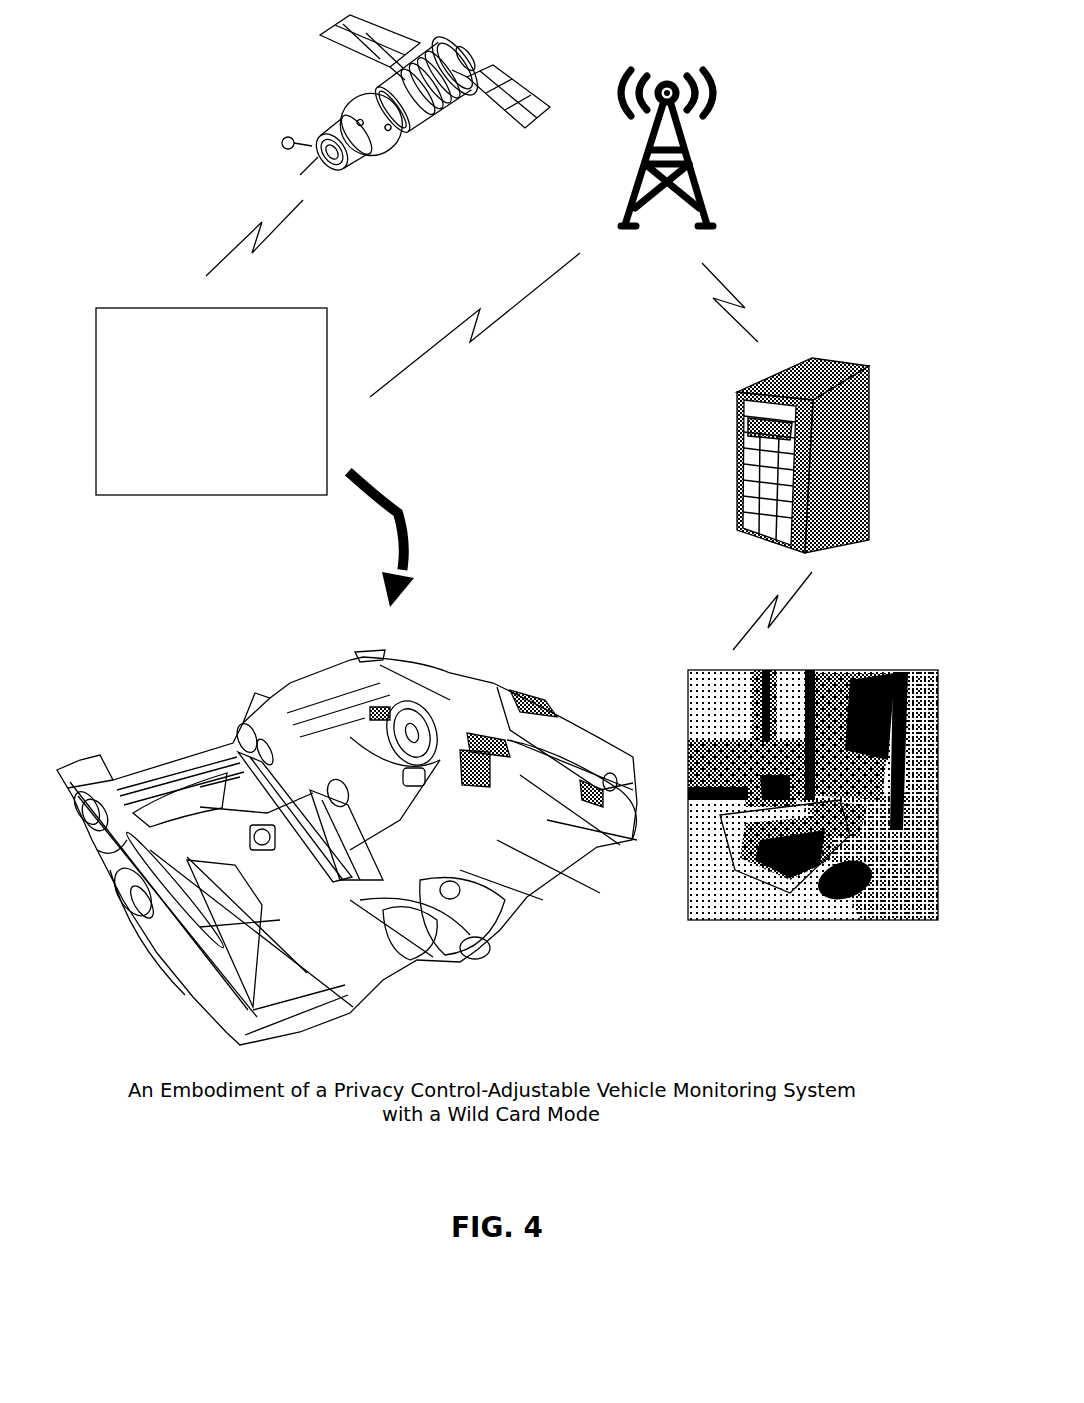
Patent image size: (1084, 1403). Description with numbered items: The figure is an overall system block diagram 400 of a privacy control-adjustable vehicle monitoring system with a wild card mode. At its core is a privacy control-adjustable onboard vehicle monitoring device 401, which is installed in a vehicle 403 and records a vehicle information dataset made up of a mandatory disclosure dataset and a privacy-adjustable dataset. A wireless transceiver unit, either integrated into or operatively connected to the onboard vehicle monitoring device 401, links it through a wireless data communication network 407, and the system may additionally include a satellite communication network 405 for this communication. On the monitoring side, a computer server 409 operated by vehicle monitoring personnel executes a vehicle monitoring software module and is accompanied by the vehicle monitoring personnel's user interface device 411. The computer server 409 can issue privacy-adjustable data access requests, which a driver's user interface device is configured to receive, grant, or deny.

The overall system block diagram 400 is at (473, 1177).
The privacy control-adjustable onboard vehicle monitoring device 401 is at (211, 401).
The vehicle 403 is at (525, 925).
The satellite communication network 405 is at (418, 145).
The wireless data communication network 407 is at (737, 77).
The computer server 409 is at (823, 350).
The vehicle monitoring personnel's user interface device 411 is at (712, 660).